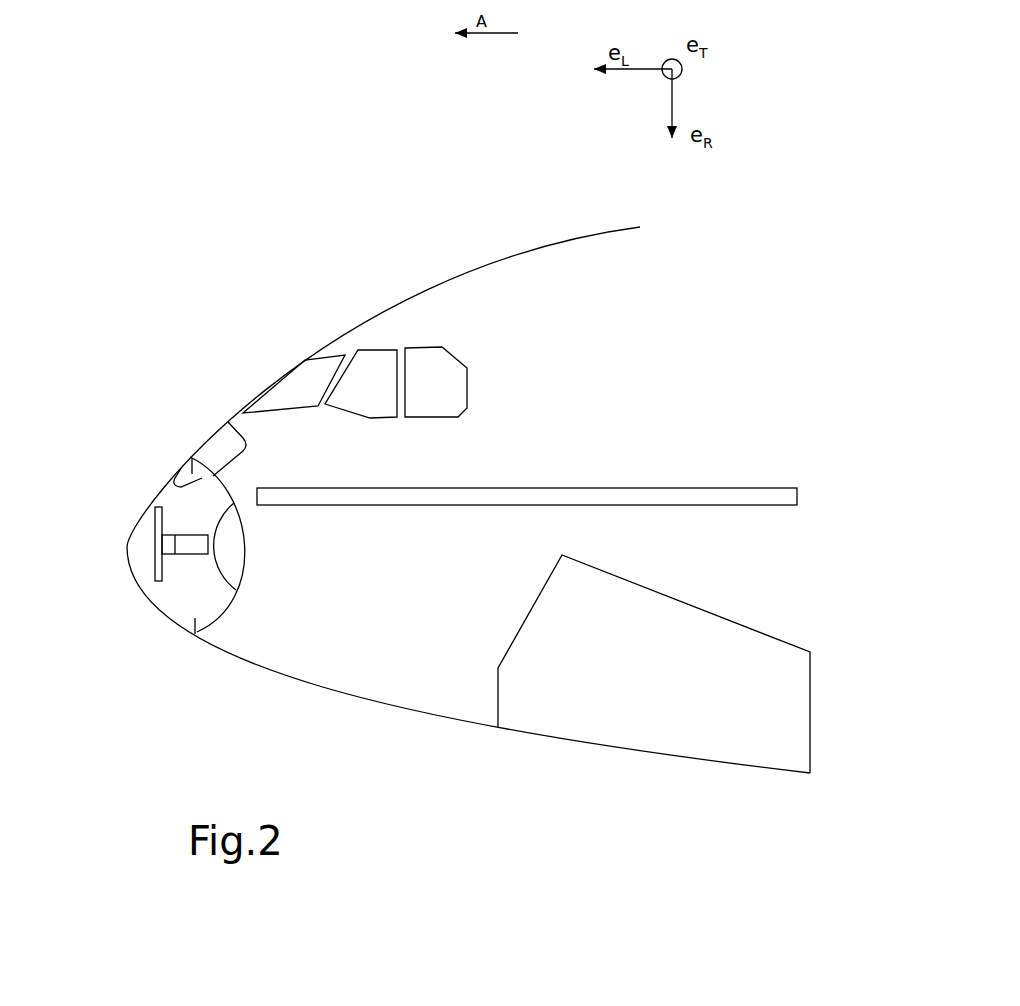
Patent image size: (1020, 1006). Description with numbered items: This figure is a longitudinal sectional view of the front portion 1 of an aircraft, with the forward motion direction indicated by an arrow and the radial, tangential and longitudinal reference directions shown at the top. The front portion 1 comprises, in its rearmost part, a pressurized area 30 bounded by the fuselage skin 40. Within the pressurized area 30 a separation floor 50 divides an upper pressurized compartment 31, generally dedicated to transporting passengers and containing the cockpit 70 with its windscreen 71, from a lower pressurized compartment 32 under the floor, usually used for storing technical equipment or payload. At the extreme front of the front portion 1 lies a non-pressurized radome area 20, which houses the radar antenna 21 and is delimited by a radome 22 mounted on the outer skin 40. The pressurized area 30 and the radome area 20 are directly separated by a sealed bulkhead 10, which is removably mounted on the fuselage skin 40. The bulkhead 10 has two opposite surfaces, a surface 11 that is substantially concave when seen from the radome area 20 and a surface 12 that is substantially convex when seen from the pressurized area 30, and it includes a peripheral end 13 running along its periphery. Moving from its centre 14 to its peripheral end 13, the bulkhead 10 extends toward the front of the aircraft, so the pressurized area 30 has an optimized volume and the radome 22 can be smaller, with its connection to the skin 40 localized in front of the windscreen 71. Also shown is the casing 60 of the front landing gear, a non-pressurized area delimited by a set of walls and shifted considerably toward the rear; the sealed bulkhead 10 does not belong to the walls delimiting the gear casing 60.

The front portion 1 is at (368, 233).
The sealed bulkhead 10 is at (243, 607).
The concave surface 11 is at (185, 484).
The convex surface 12 is at (213, 457).
The peripheral end 13 is at (222, 443).
The centre 14 is at (243, 543).
The radome area 20 is at (178, 600).
The radar antenna 21 is at (143, 543).
The radome 22 is at (132, 520).
The pressurized area 30 is at (338, 650).
The upper pressurized compartment 31 is at (623, 318).
The lower pressurized compartment 32 is at (690, 558).
The fuselage skin 40 is at (500, 236).
The separation floor 50 is at (770, 488).
The gear casing 60 is at (595, 709).
The cockpit 70 is at (371, 332).
The windscreen 71 is at (302, 377).